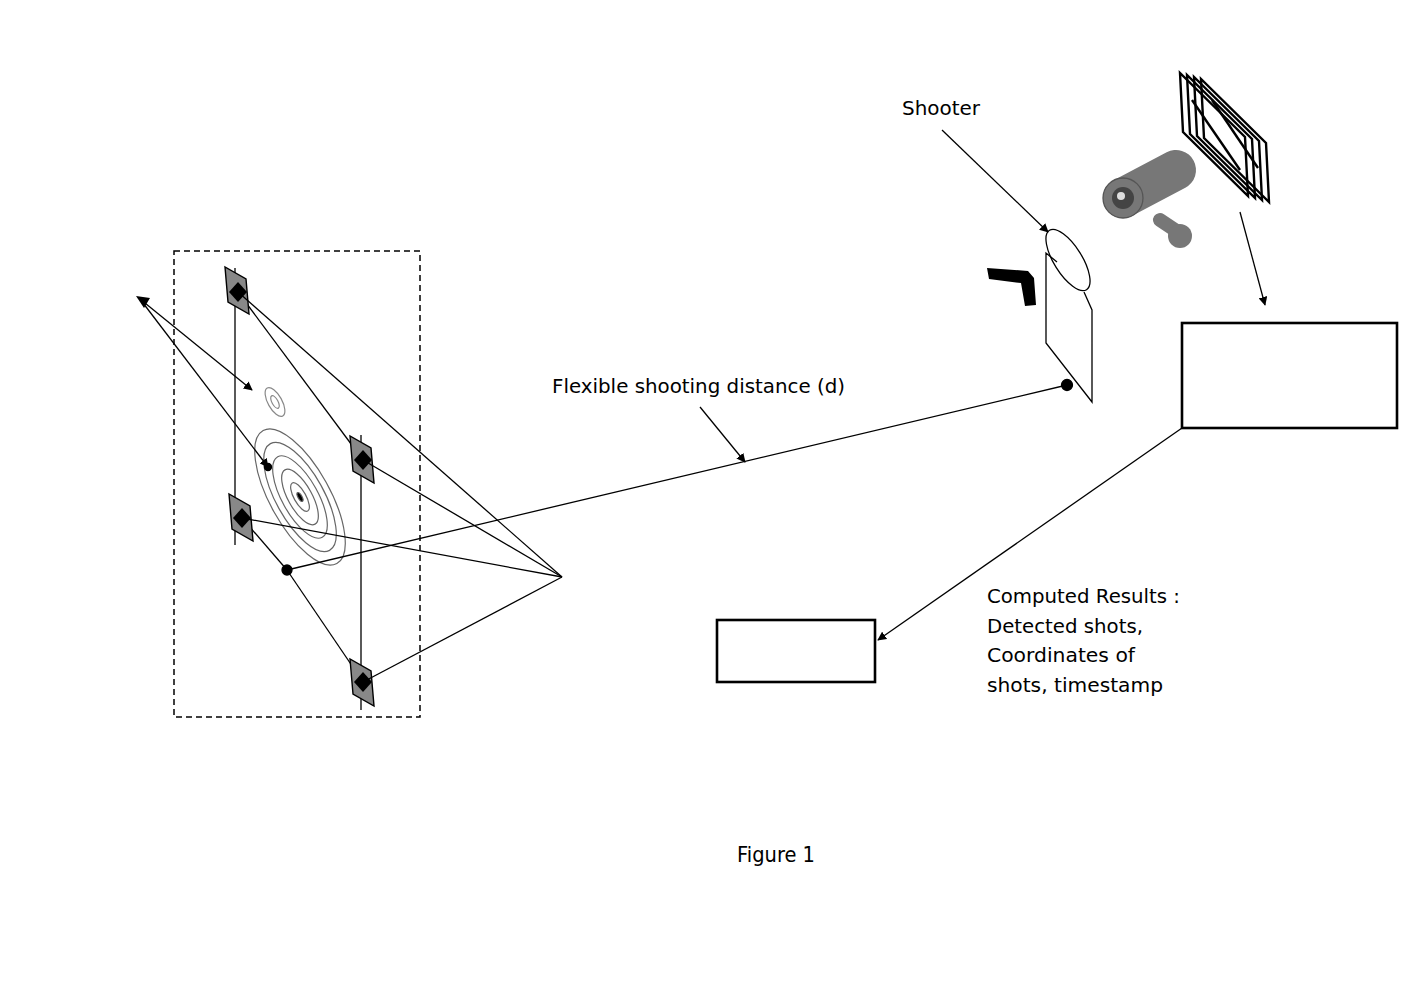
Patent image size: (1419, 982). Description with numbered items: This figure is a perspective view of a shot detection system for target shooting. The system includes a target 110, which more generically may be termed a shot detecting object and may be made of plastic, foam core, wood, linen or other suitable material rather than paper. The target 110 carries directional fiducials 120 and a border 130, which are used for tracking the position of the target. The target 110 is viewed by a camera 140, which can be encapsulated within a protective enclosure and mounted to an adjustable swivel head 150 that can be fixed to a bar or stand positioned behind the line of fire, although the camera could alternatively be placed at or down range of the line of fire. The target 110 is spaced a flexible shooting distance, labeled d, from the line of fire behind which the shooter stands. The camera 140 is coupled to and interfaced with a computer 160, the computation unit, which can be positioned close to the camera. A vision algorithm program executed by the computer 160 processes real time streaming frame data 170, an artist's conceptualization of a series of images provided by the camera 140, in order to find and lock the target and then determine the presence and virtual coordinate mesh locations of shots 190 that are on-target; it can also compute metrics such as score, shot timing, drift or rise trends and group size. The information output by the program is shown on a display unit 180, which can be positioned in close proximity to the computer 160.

The target 110 is at (338, 251).
The directional fiducials 120 is at (425, 487).
The border 130 is at (312, 612).
The camera 140 is at (1120, 183).
The adjustable swivel head 150 is at (1175, 253).
The computer 160 is at (1291, 432).
The real time streaming frame data 170 is at (1260, 115).
The display unit 180 is at (760, 688).
The shots 190 is at (190, 371).